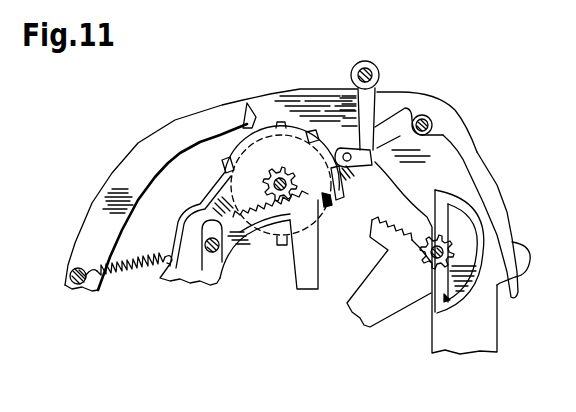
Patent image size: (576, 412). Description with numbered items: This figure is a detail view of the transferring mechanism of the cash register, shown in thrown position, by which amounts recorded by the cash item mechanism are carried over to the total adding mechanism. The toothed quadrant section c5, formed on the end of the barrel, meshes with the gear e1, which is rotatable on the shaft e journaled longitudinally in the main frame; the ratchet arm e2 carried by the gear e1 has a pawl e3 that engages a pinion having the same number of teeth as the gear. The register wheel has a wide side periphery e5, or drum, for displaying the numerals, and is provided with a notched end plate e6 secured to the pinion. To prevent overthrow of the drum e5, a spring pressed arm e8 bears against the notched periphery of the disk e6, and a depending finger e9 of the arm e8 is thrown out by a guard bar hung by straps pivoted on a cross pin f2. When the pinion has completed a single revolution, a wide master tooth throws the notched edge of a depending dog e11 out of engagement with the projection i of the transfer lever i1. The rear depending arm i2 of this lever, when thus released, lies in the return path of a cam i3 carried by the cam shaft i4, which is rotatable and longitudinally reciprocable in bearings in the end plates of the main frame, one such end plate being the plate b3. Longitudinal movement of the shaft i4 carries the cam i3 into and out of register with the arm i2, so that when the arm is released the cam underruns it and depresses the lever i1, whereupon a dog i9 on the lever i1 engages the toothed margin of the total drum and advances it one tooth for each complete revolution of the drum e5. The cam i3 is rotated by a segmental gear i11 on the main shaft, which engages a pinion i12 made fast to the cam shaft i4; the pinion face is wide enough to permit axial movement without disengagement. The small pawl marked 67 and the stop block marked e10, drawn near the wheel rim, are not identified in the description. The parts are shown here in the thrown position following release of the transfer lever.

The end plate b3 is at (217, 108).
The register wheel side periphery e5 is at (218, 136).
The pawl e3 is at (281, 185).
The pawl 67 is at (254, 124).
The spring pressed arm e8 is at (222, 166).
The depending finger e9 is at (181, 222).
The gear e1 is at (268, 182).
The shaft e is at (280, 177).
The stop e10 is at (313, 131).
The notched end plate e6 is at (263, 238).
The cross pin f2 is at (214, 252).
The quadrant section c5 is at (308, 289).
The ratchet arm e2 is at (326, 208).
The dog i9 is at (340, 199).
The depending dog e11 is at (352, 176).
The transfer lever i1 is at (403, 115).
The projection i is at (373, 162).
The rear depending arm i2 is at (508, 209).
The cam i3 is at (491, 288).
The cam shaft i4 is at (450, 252).
The pinion i12 is at (420, 255).
The segmental gear i11 is at (379, 315).